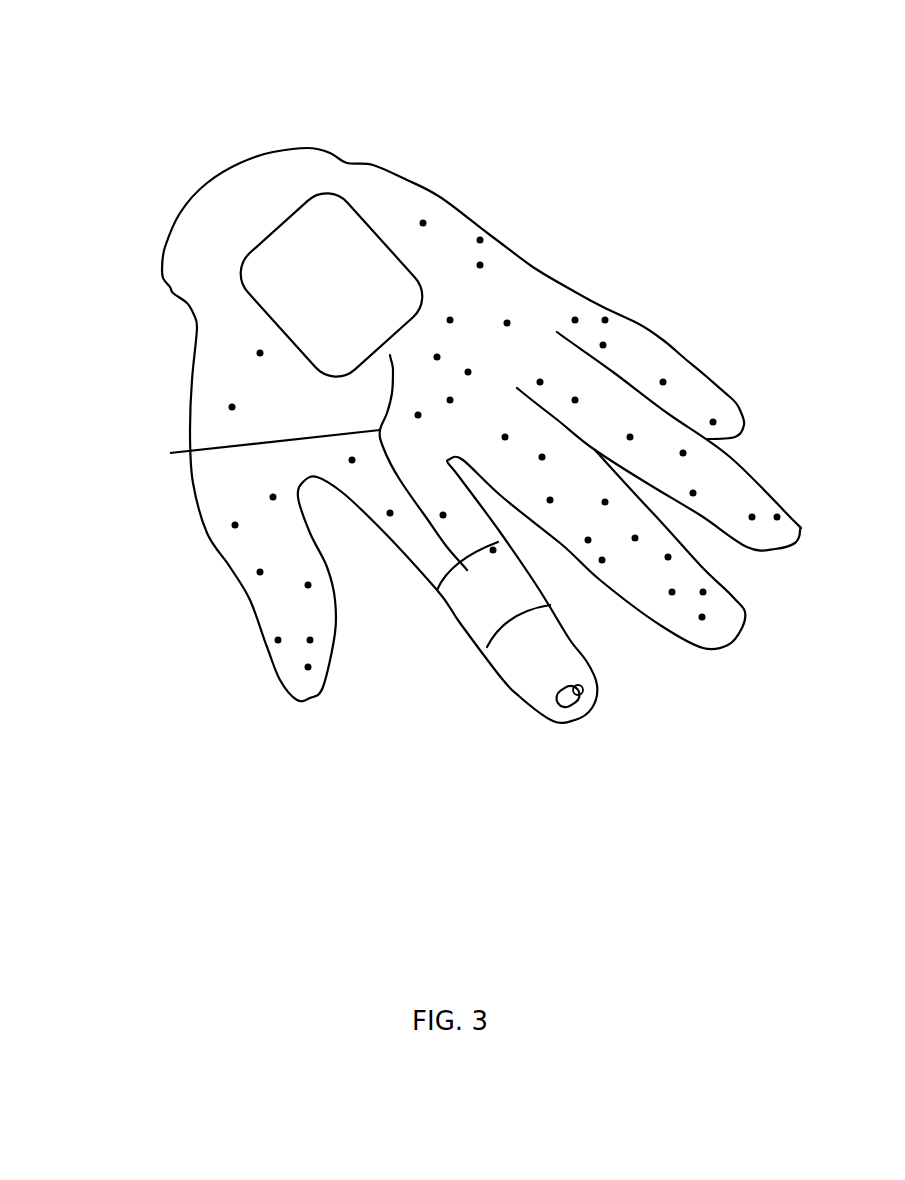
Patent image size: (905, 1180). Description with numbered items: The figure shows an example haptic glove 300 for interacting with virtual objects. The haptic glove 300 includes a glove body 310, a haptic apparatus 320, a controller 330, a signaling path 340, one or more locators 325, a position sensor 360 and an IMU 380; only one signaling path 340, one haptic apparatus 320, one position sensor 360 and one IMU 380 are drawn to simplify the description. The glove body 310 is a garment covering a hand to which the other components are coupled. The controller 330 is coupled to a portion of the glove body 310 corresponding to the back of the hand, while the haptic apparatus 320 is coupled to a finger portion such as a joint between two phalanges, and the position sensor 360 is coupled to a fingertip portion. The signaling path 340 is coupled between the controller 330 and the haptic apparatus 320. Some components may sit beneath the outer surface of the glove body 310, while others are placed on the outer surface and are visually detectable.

The haptic glove 300 is at (83, 28).
The glove body 310 is at (197, 327).
The haptic apparatus 320 is at (470, 612).
The locators 325 is at (605, 320).
The controller 330 is at (320, 227).
The signaling path 340 is at (236, 457).
The position sensor 360 is at (585, 689).
The IMU 380 is at (558, 708).